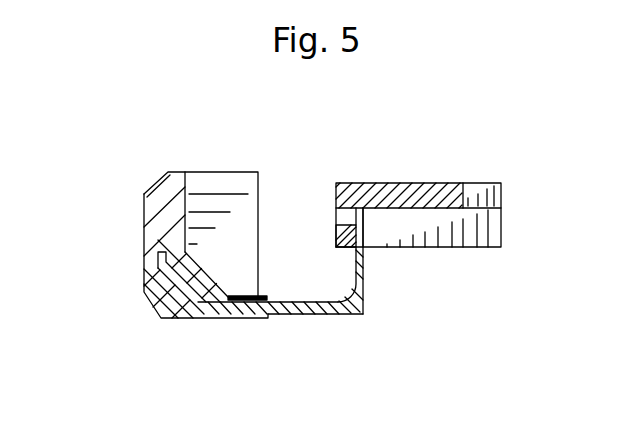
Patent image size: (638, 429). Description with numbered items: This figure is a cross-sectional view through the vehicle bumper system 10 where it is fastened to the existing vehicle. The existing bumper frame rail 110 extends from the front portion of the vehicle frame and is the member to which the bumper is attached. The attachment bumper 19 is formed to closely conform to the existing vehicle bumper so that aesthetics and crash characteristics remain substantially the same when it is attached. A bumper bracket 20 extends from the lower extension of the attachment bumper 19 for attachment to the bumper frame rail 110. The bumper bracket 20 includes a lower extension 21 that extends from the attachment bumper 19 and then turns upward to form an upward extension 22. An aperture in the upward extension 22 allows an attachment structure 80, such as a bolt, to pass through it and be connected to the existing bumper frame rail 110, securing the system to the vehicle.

The vehicle bumper system 10 is at (140, 236).
The attachment bumper 19 is at (150, 268).
The bumper bracket 20 is at (320, 314).
The lower extension 21 is at (270, 315).
The upward extension 22 is at (363, 272).
The attachment structure 80 is at (342, 219).
The bumper frame rail 110 is at (425, 183).